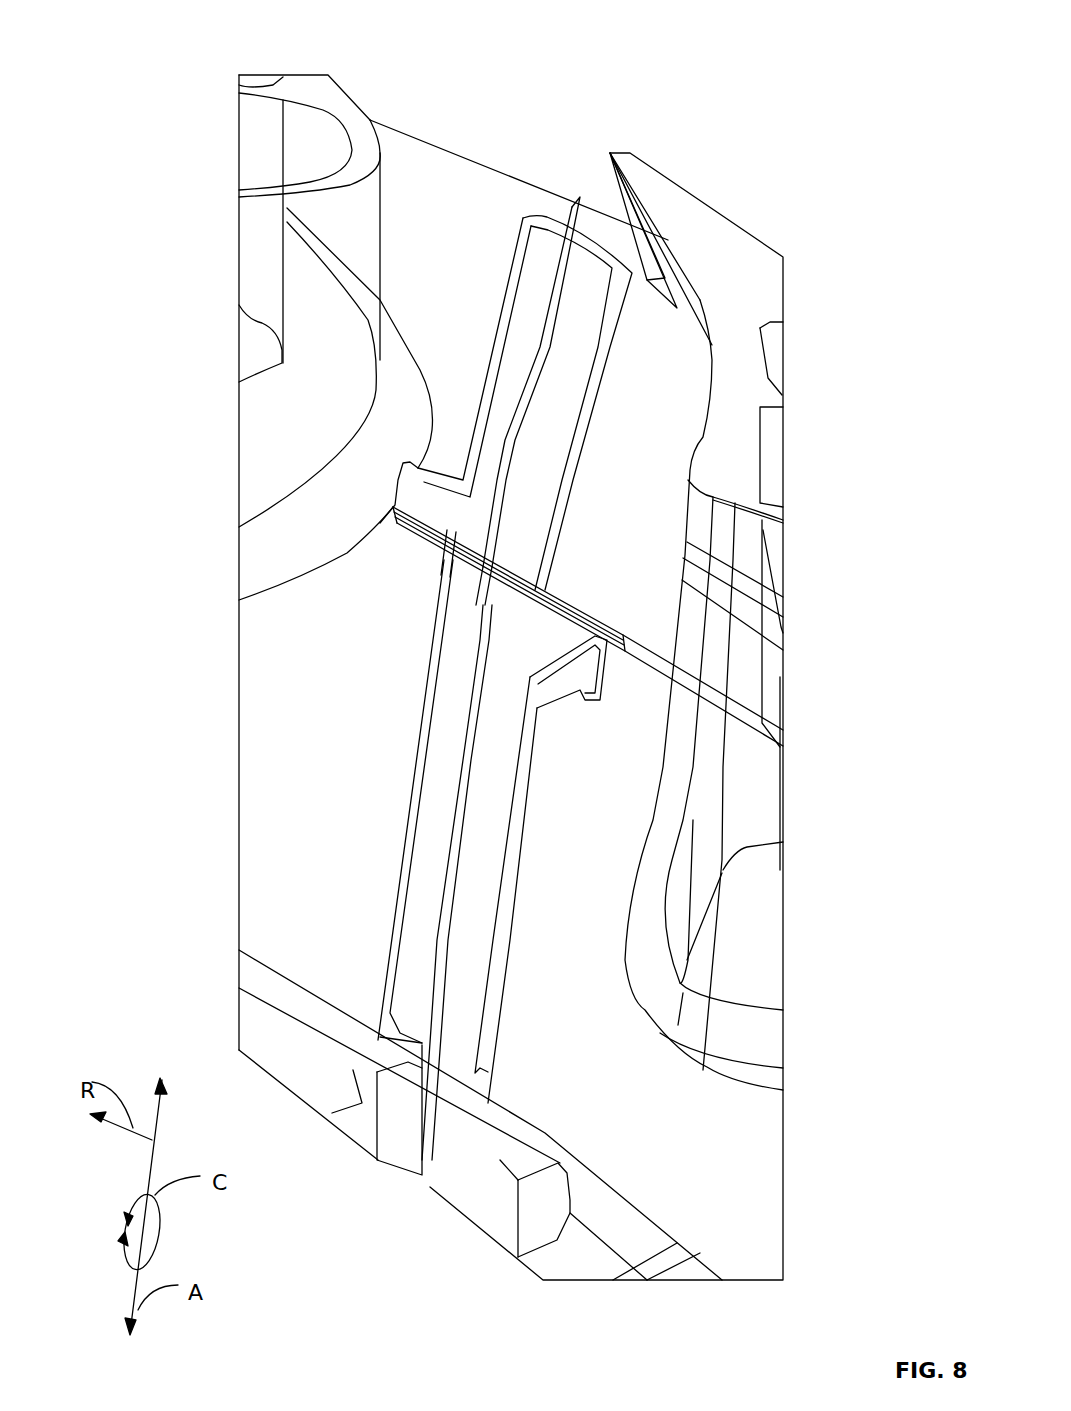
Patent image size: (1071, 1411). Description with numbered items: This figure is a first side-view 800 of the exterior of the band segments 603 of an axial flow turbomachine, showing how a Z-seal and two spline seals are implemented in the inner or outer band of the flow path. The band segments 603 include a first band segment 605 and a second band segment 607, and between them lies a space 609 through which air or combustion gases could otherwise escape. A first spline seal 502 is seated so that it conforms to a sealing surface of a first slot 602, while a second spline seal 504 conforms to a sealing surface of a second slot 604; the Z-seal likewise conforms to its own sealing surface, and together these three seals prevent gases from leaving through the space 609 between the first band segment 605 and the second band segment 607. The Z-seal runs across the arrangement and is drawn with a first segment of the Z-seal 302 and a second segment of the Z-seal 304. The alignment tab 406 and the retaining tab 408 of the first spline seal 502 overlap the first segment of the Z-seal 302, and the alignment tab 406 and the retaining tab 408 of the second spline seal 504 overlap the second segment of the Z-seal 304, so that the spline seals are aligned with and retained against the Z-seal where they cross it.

The first side-view 800 is at (866, 40).
The band segments 603 is at (592, 123).
The first band segment 605 is at (423, 140).
The second band segment 607 is at (627, 212).
The first slot 602 is at (513, 278).
The first spline seal 502 is at (503, 350).
The retaining tab 408 is at (393, 510).
The second segment of the Z-seal 304 is at (455, 567).
The first segment of the Z-seal 302 is at (543, 583).
The alignment tab 406 is at (513, 573).
The space between the first band segment and the second band segment 609 is at (483, 667).
The second spline seal 504 is at (425, 762).
The second slot 604 is at (408, 813).